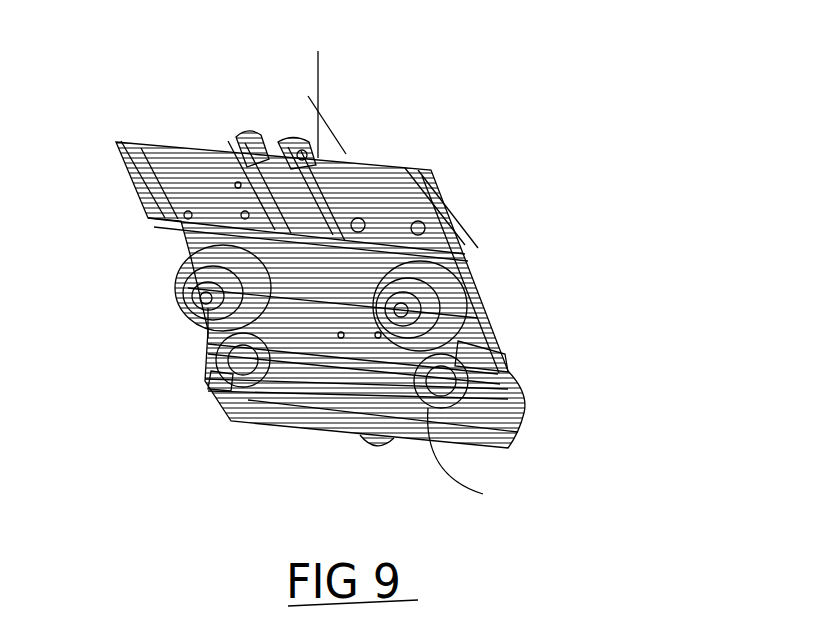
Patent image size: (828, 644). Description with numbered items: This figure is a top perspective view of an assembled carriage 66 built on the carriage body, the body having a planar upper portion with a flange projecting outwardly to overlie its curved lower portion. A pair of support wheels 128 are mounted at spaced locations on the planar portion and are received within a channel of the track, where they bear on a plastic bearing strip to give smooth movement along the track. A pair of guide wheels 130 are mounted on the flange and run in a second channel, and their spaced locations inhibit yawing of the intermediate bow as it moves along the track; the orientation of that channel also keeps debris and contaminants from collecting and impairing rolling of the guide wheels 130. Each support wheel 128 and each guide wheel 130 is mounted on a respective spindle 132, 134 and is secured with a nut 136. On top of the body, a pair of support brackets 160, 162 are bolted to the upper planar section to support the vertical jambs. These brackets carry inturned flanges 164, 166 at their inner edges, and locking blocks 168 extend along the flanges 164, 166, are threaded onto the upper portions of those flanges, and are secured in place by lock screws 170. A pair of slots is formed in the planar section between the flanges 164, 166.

The carriage assembly 66 is at (445, 136).
The support wheels 128 is at (168, 262).
The guide wheels 130 is at (206, 350).
The spindle 132 is at (462, 252).
The spindle 134 is at (481, 458).
The nut 136 is at (458, 331).
The support bracket 160 is at (185, 132).
The support bracket 162 is at (300, 104).
The inturned flange 164 is at (225, 128).
The inturned flange 166 is at (300, 132).
The locking block 168 is at (266, 296).
The lock screw 170 is at (310, 43).